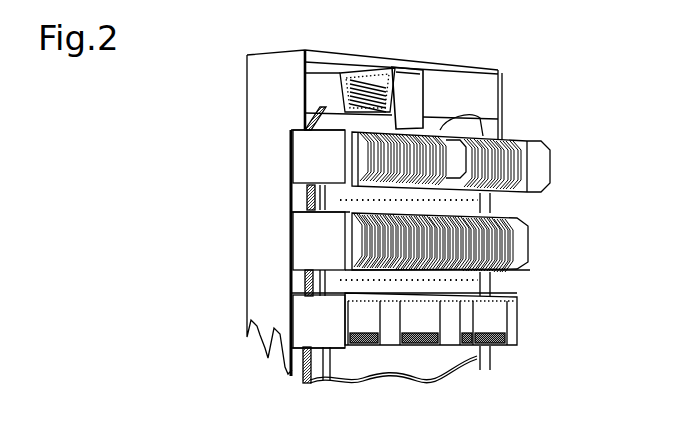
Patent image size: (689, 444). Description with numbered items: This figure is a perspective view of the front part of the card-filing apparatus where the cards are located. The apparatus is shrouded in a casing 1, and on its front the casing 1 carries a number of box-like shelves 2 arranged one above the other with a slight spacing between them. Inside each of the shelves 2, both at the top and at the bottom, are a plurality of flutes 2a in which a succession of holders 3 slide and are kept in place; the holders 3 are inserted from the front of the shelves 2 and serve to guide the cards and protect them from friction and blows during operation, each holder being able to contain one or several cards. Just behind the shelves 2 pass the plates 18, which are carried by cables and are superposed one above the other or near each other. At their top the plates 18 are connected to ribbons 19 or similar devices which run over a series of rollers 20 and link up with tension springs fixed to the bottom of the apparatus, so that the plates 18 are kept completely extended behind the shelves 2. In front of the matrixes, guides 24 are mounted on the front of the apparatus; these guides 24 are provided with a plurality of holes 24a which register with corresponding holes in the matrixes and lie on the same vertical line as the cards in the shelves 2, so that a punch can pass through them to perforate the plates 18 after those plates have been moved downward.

The casing 1 is at (257, 127).
The shelves 2 is at (306, 224).
The flutes 2a is at (505, 333).
The holders 3 is at (540, 160).
The plates 18 is at (442, 128).
The ribbons 19 is at (410, 78).
The rollers 20 is at (353, 92).
The guides 24 is at (300, 272).
The holes 24a is at (500, 201).